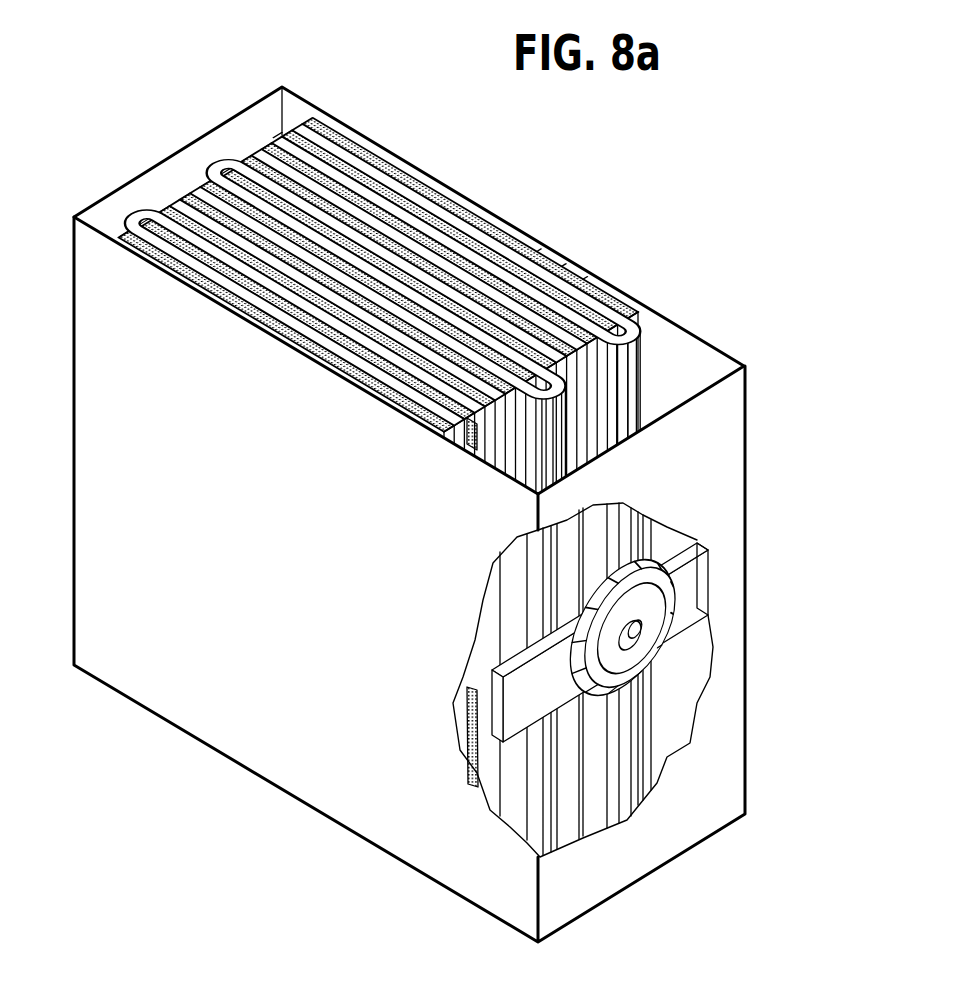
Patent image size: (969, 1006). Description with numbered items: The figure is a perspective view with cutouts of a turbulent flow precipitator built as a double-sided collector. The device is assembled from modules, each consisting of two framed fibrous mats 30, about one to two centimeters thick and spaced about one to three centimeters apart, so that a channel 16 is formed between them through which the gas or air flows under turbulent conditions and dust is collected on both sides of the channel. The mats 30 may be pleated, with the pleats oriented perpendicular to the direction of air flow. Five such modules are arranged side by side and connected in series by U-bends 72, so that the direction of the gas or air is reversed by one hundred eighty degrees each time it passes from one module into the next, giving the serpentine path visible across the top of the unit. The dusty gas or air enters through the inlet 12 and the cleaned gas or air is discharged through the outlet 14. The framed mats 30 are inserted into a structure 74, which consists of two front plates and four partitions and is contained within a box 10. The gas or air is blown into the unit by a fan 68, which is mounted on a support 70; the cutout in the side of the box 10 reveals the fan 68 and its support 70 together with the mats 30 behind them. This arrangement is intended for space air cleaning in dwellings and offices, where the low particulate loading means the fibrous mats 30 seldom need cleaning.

The box 10 is at (305, 705).
The inlet 12 is at (470, 262).
The outlet 14 is at (297, 122).
The channel 16 is at (293, 265).
The framed fibrous mats 30 is at (437, 172).
The fan 68 is at (655, 655).
The support 70 is at (530, 692).
The U-bends 72 is at (213, 147).
The structure 74 is at (277, 135).